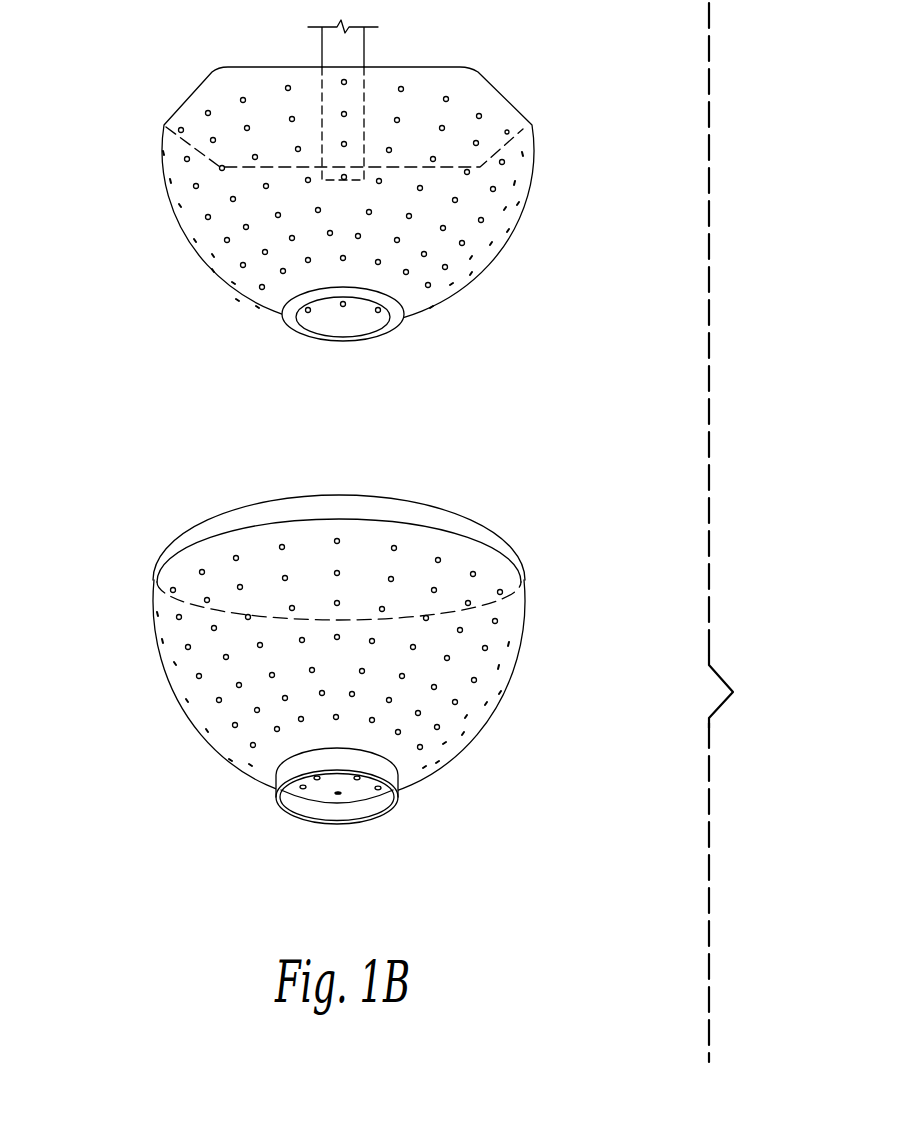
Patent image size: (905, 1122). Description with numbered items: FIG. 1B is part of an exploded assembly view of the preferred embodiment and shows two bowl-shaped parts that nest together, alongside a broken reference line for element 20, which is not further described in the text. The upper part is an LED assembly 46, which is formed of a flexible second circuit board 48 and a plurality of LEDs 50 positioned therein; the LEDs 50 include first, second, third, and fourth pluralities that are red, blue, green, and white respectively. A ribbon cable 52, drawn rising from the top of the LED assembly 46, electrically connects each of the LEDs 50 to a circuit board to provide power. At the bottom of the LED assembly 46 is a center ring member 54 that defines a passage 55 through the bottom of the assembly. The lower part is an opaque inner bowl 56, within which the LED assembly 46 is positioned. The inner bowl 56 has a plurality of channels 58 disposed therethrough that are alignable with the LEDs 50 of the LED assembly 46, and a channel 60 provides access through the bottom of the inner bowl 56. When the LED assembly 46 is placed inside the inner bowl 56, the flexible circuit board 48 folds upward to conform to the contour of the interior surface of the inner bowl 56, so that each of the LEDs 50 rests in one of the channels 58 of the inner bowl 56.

The cooking vessel / pot 20 is at (738, 532).
The LED assembly 46 is at (140, 63).
The flexible second circuit board 48 is at (533, 165).
The LEDs 50 is at (444, 99).
The ribbon cable 52 is at (365, 49).
The center ring member 54 is at (393, 324).
The passage 55 is at (328, 318).
The opaque inner bowl 56 is at (111, 538).
The channels 58 is at (243, 587).
The channel 60 is at (313, 799).